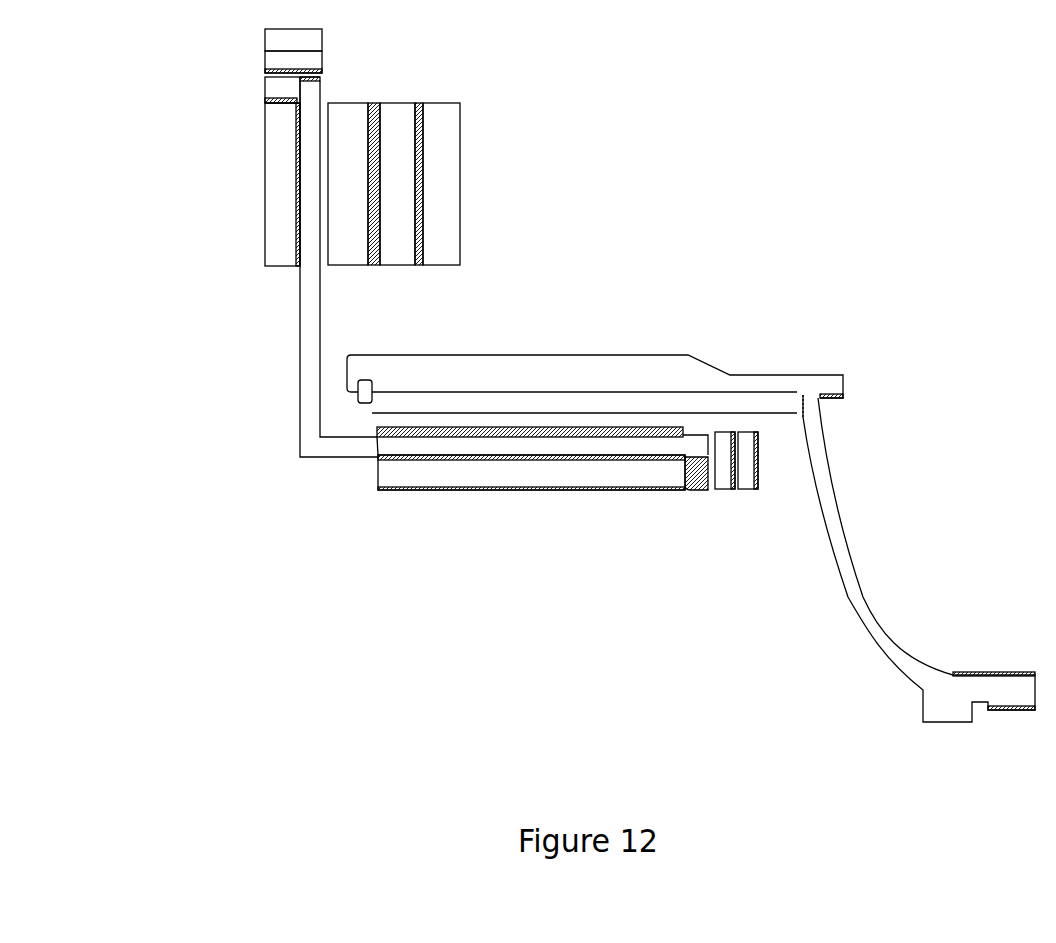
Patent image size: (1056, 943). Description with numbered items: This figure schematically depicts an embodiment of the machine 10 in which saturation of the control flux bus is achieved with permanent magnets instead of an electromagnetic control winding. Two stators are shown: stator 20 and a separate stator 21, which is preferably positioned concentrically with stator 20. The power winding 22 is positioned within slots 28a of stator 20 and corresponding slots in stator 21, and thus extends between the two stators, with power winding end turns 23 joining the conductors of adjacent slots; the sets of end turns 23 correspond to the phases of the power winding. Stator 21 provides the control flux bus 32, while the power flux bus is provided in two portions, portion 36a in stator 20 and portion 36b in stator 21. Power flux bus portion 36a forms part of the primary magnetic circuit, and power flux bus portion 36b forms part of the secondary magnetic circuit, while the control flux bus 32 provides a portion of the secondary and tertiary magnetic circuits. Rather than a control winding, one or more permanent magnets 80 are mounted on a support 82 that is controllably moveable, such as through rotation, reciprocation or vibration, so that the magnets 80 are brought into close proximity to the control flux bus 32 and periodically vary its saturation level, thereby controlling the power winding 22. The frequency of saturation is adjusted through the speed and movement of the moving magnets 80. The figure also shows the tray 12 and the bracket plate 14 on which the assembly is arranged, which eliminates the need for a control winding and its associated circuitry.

The cartridge assembly 10 is at (915, 272).
The tray 12 is at (500, 355).
The bracket plate 14 is at (707, 392).
The stator 20 is at (523, 483).
The stator 21 is at (277, 203).
The power winding 22 is at (340, 448).
The power winding end turns 23 is at (265, 80).
The slots 28a is at (590, 462).
The control flux bus 32 is at (347, 157).
The power flux bus portion 36a is at (420, 483).
The power flux bus portion 36b is at (277, 240).
The permanent magnets 80 is at (398, 178).
The support 82 is at (443, 217).